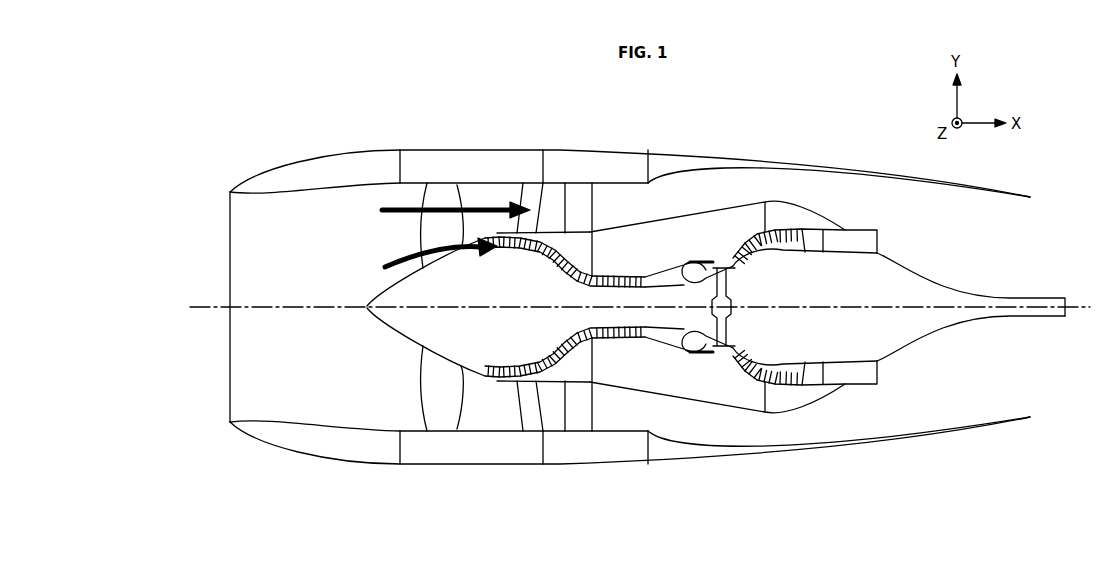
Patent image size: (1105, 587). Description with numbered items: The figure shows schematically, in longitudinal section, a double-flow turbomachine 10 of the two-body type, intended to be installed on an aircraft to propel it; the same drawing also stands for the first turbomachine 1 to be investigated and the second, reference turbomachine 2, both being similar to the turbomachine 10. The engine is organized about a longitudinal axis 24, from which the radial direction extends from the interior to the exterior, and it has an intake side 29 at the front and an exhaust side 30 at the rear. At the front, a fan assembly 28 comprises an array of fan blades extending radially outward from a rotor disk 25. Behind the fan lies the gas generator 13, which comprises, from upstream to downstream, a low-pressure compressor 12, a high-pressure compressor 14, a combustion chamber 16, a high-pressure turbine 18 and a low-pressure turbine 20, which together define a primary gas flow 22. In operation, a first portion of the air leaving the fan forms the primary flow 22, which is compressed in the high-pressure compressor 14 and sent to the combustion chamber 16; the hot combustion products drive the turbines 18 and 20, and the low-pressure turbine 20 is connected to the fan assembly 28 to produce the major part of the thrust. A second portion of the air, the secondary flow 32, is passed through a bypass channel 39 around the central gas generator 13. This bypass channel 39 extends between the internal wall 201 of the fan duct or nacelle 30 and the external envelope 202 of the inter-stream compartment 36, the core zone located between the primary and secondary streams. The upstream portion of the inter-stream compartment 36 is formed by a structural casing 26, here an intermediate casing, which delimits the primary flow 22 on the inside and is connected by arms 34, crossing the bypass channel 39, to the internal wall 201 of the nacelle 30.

The first turbomachine 1 is at (640, 429).
The second turbomachine 2 is at (702, 518).
The turbomachine 10 is at (734, 130).
The low-pressure compressor 12 is at (510, 378).
The gas generator 13 is at (843, 213).
The high-pressure compressor 14 is at (640, 343).
The combustion chamber 16 is at (693, 352).
The high-pressure turbine 18 is at (737, 365).
The low-pressure turbine 20 is at (800, 385).
The primary gas flow 22 is at (397, 256).
The longitudinal axis 24 is at (201, 307).
The rotor disk 25 is at (523, 291).
The structural casing 26 is at (577, 243).
The fan assembly 28 is at (450, 386).
The intake side 29 is at (222, 360).
The fan duct 30 is at (422, 150).
The secondary flow 32 is at (393, 206).
The arms 34 is at (588, 216).
The inter-stream compartment 36 is at (684, 246).
The bypass channel 39 is at (684, 203).
The internal wall 201 is at (749, 170).
The external envelope 202 is at (605, 222).